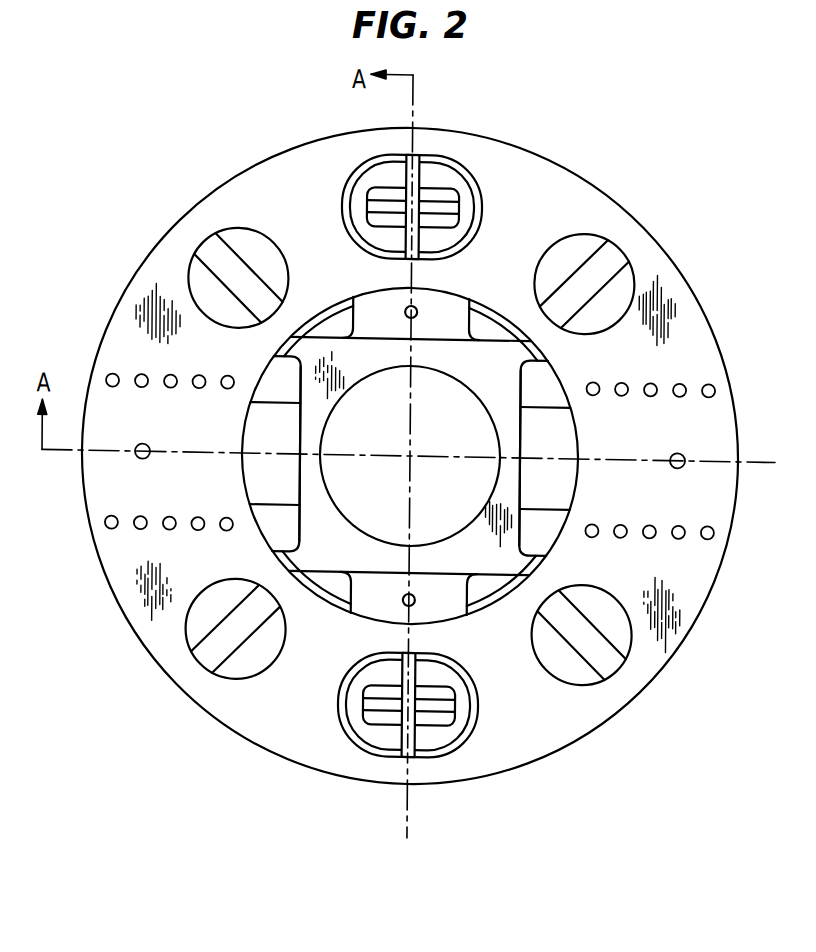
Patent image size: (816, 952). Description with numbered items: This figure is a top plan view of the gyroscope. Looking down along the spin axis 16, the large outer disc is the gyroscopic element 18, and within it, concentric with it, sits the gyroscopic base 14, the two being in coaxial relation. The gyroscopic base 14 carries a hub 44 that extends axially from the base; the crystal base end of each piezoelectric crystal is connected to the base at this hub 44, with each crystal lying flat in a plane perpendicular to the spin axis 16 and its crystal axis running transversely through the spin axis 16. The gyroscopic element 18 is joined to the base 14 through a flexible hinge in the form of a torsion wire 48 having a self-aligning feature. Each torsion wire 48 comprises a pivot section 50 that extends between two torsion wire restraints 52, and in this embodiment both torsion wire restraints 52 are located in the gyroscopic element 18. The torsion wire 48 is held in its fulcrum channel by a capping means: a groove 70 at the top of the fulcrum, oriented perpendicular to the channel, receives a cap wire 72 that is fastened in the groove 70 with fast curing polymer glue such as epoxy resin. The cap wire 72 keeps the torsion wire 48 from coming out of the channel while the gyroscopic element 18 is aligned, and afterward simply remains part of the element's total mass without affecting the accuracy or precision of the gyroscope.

The gyroscopic base 14 is at (488, 562).
The spin axis 16 is at (412, 456).
The gyroscopic element 18 is at (140, 273).
The hub 44 is at (482, 355).
The torsion wire 48 is at (420, 157).
The pivot section 50 is at (398, 173).
The torsion wire restraints 52 is at (389, 155).
The groove 70 is at (460, 203).
The cap wire 72 is at (348, 207).